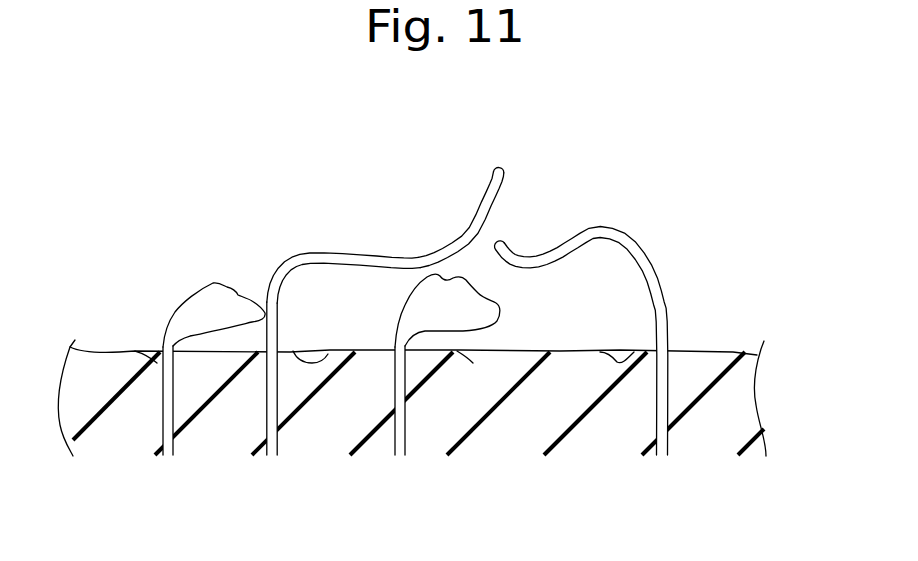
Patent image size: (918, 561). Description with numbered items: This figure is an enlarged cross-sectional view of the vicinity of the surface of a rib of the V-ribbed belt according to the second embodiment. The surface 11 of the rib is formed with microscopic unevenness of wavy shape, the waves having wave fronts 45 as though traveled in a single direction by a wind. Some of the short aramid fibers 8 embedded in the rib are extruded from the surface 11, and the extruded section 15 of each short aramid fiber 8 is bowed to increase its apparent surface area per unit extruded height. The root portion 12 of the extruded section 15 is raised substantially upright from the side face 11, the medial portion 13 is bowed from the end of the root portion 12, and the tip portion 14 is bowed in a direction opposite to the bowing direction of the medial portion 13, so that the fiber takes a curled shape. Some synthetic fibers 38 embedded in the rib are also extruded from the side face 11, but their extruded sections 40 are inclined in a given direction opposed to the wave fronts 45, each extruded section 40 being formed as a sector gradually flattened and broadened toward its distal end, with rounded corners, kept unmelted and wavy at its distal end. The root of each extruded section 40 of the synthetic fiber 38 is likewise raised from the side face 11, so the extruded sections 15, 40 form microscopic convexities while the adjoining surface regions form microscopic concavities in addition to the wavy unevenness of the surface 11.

The short aramid fiber 8 is at (279, 438).
The surface of the rib 11 is at (728, 348).
The root portion 12 is at (278, 271).
The medial portion 13 is at (357, 253).
The tip portion 14 is at (470, 236).
The extruded section 15 is at (373, 302).
The synthetic fiber 38 is at (175, 427).
The extruded section 40 is at (512, 307).
The wave front 45 is at (298, 348).